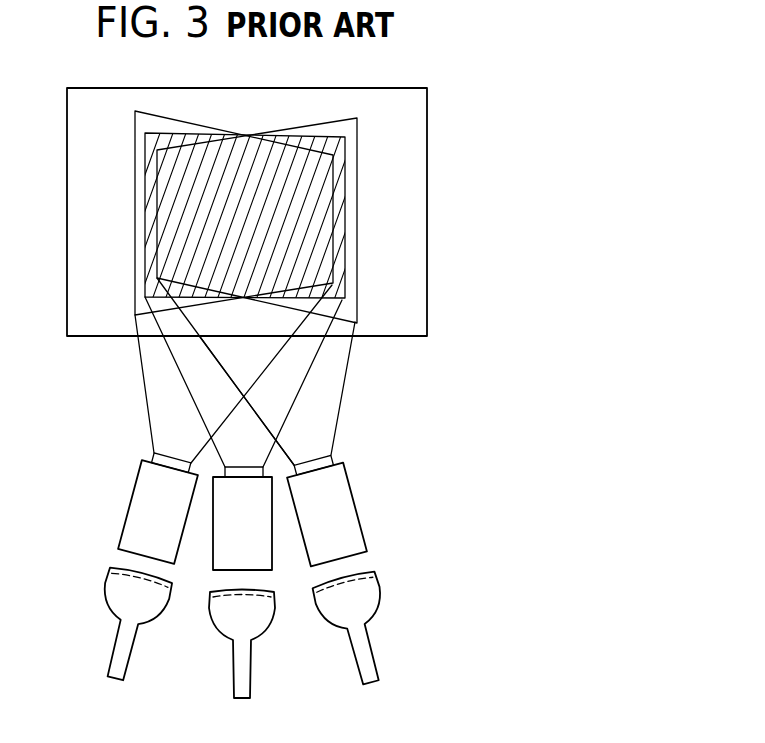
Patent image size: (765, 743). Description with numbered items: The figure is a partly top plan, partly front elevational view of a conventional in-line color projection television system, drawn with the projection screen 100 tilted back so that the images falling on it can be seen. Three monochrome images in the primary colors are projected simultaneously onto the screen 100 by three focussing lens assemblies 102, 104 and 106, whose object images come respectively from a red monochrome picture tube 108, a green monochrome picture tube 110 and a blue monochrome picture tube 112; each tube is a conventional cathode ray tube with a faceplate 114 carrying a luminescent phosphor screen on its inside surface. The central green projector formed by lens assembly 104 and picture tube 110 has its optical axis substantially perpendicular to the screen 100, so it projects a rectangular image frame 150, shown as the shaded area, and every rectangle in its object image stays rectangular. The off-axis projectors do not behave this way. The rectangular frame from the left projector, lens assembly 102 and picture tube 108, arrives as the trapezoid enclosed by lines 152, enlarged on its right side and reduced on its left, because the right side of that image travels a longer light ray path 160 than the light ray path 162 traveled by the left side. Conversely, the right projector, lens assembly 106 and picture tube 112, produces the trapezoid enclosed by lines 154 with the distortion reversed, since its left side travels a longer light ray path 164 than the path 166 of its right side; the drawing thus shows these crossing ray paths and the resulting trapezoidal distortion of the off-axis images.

The projection screen 100 is at (395, 90).
The focussing lens assembly 102 is at (130, 503).
The focussing lens assembly 104 is at (203, 575).
The focussing lens assembly 106 is at (358, 510).
The red monochrome picture tube 108 is at (108, 594).
The green monochrome picture tube 110 is at (255, 667).
The blue monochrome picture tube 112 is at (381, 600).
The faceplate 114 is at (110, 566).
The rectangular image frame 150 is at (145, 193).
The lines enclosing trapezoidal shape 152 is at (155, 242).
The lines enclosing trapezoidal area 154 is at (135, 122).
The light ray path 160 is at (203, 446).
The light ray path 162 is at (148, 400).
The light ray path 164 is at (295, 391).
The light ray path 166 is at (342, 402).